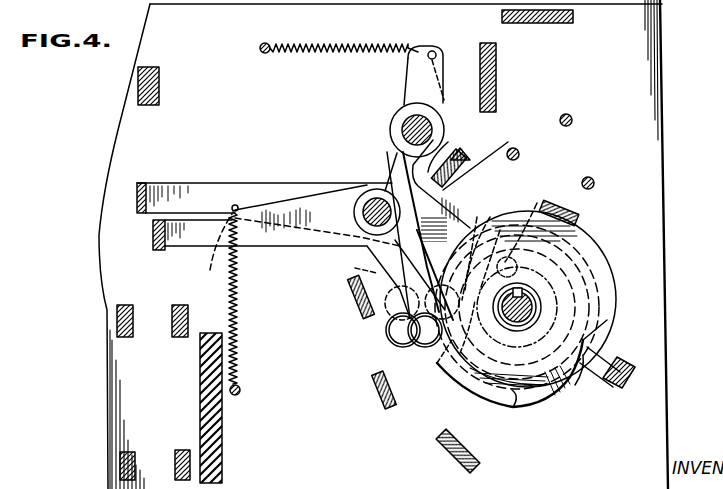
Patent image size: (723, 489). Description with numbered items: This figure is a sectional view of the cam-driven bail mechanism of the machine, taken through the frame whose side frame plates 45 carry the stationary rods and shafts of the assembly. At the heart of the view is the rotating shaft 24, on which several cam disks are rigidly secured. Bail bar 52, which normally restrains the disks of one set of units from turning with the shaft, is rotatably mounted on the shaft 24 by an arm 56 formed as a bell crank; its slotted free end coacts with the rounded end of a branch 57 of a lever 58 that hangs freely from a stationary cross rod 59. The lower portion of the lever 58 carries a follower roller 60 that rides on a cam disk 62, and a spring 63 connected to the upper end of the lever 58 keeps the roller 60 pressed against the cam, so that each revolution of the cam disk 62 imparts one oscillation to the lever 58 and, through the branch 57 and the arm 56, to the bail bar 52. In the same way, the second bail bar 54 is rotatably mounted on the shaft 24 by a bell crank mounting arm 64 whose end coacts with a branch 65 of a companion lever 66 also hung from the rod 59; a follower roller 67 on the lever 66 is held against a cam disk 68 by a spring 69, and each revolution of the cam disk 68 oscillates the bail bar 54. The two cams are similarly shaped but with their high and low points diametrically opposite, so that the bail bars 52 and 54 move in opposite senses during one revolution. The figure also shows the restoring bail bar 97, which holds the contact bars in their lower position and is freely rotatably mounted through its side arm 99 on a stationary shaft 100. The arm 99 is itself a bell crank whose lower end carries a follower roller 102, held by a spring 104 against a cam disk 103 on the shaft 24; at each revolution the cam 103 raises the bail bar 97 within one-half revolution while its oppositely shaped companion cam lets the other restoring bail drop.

The side frame plates 45 is at (632, 80).
The lever 66 is at (473, 154).
The bail bar 52 is at (578, 210).
The spring 63 is at (397, 50).
The spring 69 is at (405, 48).
The lever 58 is at (393, 163).
The stationary cross rod 59 is at (403, 128).
The stationary shaft 100 is at (375, 200).
The restoring bail bar 97 is at (153, 242).
The side arm 99 is at (263, 250).
The spring 104 is at (238, 327).
The shaft 24 is at (530, 305).
The cam disk 103 is at (477, 397).
The cam disk 68 is at (578, 377).
The mounting arm 64 is at (610, 357).
The bail bar 54 is at (630, 388).
The follower roller 60 is at (383, 333).
The follower roller 102 is at (397, 348).
The cam disk 62 is at (443, 352).
The follower roller 67 is at (437, 363).
The branch 57 is at (477, 217).
The branch 65 is at (500, 230).
The arm 56 is at (537, 203).